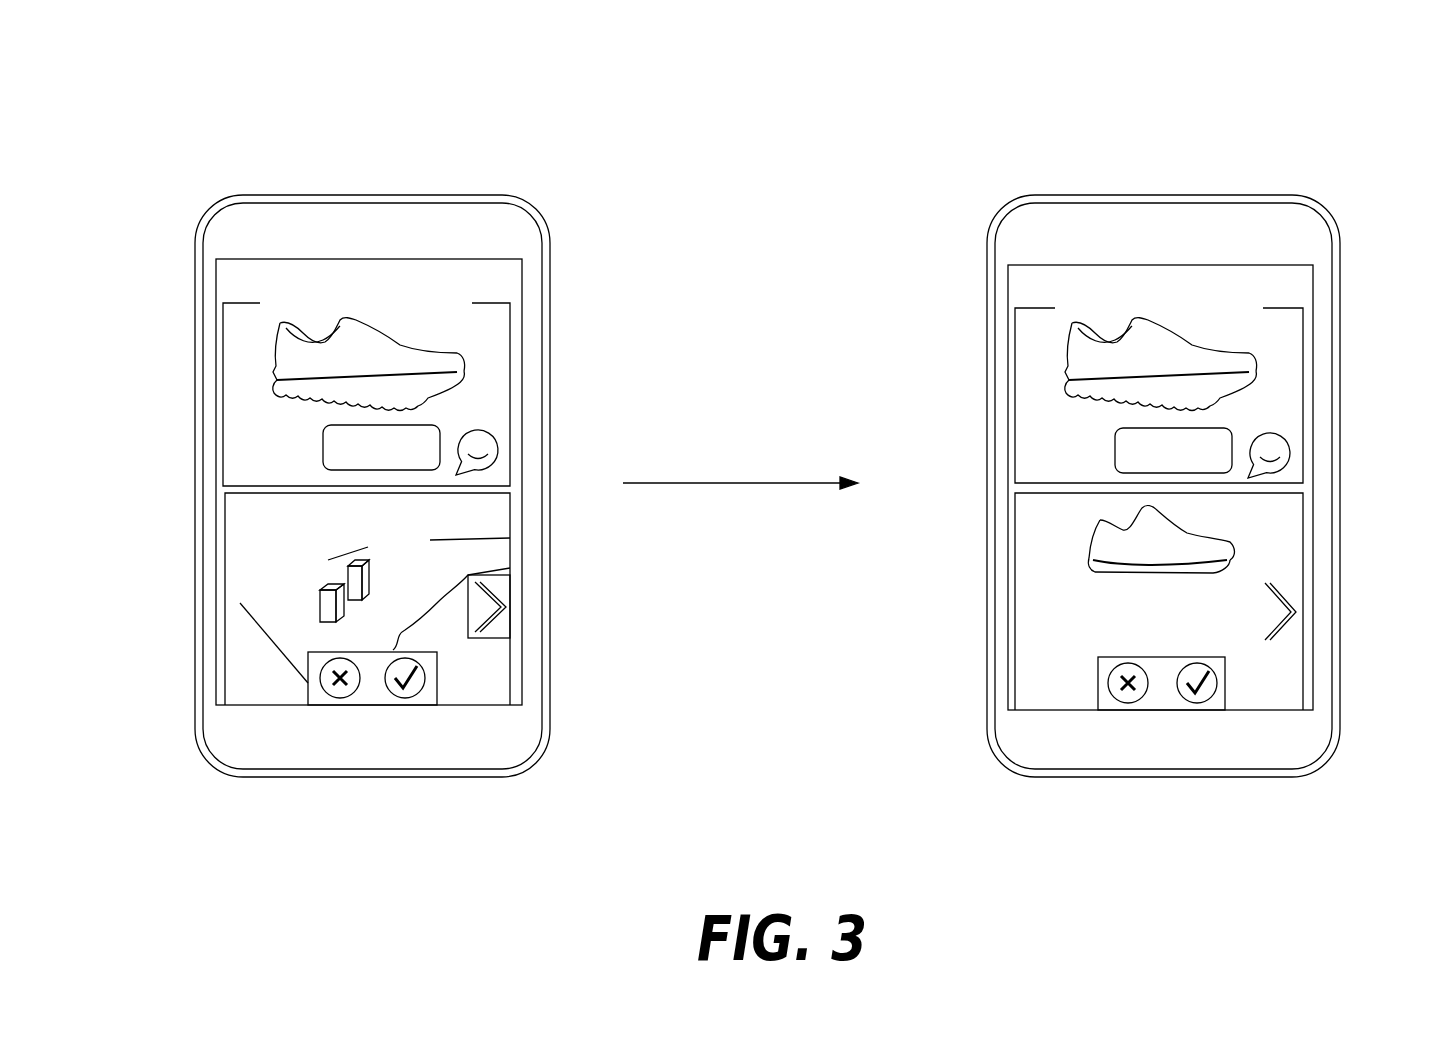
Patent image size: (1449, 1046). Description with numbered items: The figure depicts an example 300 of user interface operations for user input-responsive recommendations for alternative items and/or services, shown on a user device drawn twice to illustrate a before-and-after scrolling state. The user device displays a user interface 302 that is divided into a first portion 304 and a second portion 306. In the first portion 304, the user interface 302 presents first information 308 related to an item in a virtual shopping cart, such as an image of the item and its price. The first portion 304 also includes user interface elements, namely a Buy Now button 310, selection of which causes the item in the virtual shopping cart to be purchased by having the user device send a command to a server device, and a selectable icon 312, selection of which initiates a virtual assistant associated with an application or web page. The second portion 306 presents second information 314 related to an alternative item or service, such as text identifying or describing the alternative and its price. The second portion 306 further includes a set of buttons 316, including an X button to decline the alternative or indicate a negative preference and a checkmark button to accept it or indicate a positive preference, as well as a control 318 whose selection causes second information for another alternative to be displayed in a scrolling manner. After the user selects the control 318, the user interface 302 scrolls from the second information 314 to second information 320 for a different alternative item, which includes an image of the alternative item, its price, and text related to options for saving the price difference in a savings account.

The example of user interface operations 300 is at (207, 110).
The user interface 302 is at (240, 287).
The first portion 304 is at (240, 330).
The second portion 306 is at (240, 518).
The first information 308 is at (250, 392).
The Buy Now button 310 is at (295, 472).
The selectable icon 312 is at (522, 450).
The second information 314 is at (218, 600).
The set of buttons 316 is at (375, 697).
The control 318 is at (532, 605).
The second information for another alternative item 320 is at (1242, 571).